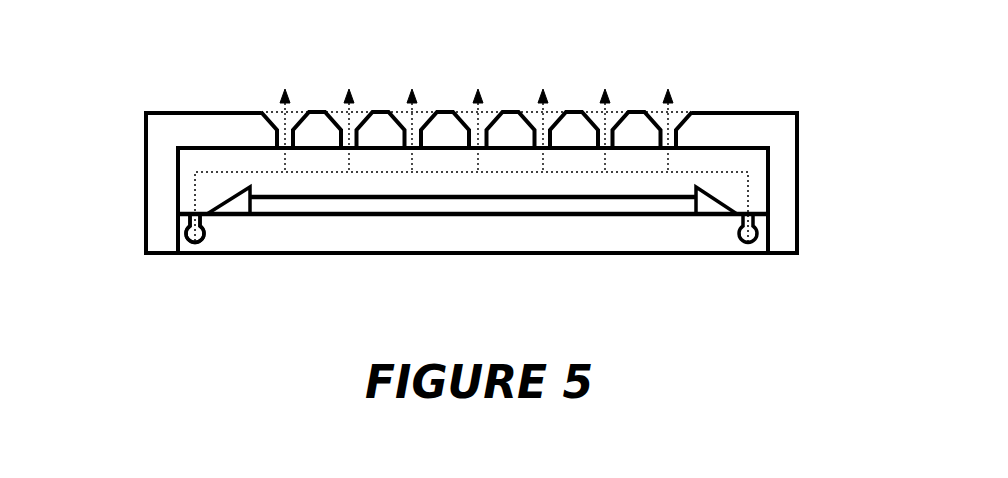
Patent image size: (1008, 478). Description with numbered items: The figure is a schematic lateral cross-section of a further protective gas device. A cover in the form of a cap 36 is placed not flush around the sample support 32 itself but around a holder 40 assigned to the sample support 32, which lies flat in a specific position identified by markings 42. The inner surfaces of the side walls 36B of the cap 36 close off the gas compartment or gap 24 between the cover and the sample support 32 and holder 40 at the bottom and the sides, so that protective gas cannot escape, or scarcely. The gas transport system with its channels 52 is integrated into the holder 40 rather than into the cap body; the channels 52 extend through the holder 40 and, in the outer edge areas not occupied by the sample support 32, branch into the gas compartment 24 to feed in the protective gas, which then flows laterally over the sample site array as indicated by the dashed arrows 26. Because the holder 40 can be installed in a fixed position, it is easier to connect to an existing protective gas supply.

The cap 36 is at (222, 77).
The side walls 36B is at (783, 183).
The gas compartment 24 is at (471, 206).
The dashed arrows 26 is at (573, 173).
The sample support 32 is at (637, 205).
The markings 42 is at (707, 202).
The channels 52 is at (198, 238).
The holder 40 is at (427, 255).